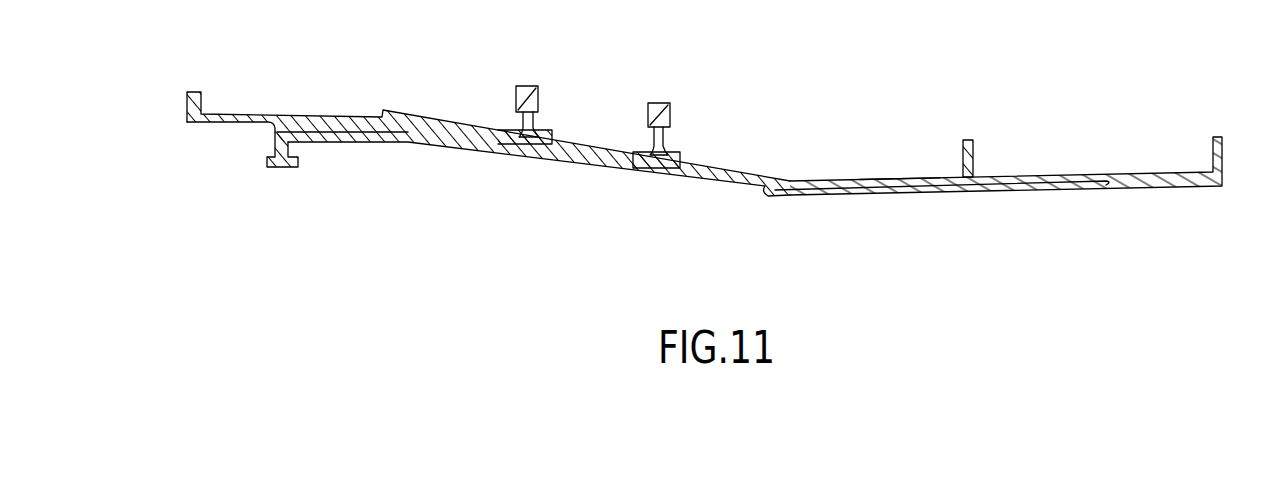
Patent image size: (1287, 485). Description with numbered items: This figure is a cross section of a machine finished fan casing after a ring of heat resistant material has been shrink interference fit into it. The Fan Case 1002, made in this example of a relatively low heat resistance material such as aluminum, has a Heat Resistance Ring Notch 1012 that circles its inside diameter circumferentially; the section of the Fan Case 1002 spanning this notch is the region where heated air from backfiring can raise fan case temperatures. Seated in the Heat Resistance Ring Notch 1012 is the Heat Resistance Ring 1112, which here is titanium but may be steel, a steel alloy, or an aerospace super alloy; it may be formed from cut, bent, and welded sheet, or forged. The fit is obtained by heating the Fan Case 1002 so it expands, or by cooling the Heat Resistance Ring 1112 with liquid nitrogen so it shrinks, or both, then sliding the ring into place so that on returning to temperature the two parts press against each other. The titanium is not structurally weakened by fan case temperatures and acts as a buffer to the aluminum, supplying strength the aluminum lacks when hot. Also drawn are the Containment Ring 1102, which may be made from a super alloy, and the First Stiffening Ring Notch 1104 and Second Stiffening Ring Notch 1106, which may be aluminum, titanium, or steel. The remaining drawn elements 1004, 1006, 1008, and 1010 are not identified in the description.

The fan case 1002 is at (1048, 172).
The first mounting pad 1004 is at (538, 144).
The second mounting pad 1006 is at (659, 168).
The bracket 1008 is at (967, 140).
The upper panel 1010 is at (357, 118).
The heat resistance ring notch 1012 is at (898, 178).
The containment ring 1102 is at (288, 167).
The first stiffening ring notch 1104 is at (528, 86).
The second stiffening ring notch 1106 is at (660, 103).
The heat resistance ring 1112 is at (993, 193).